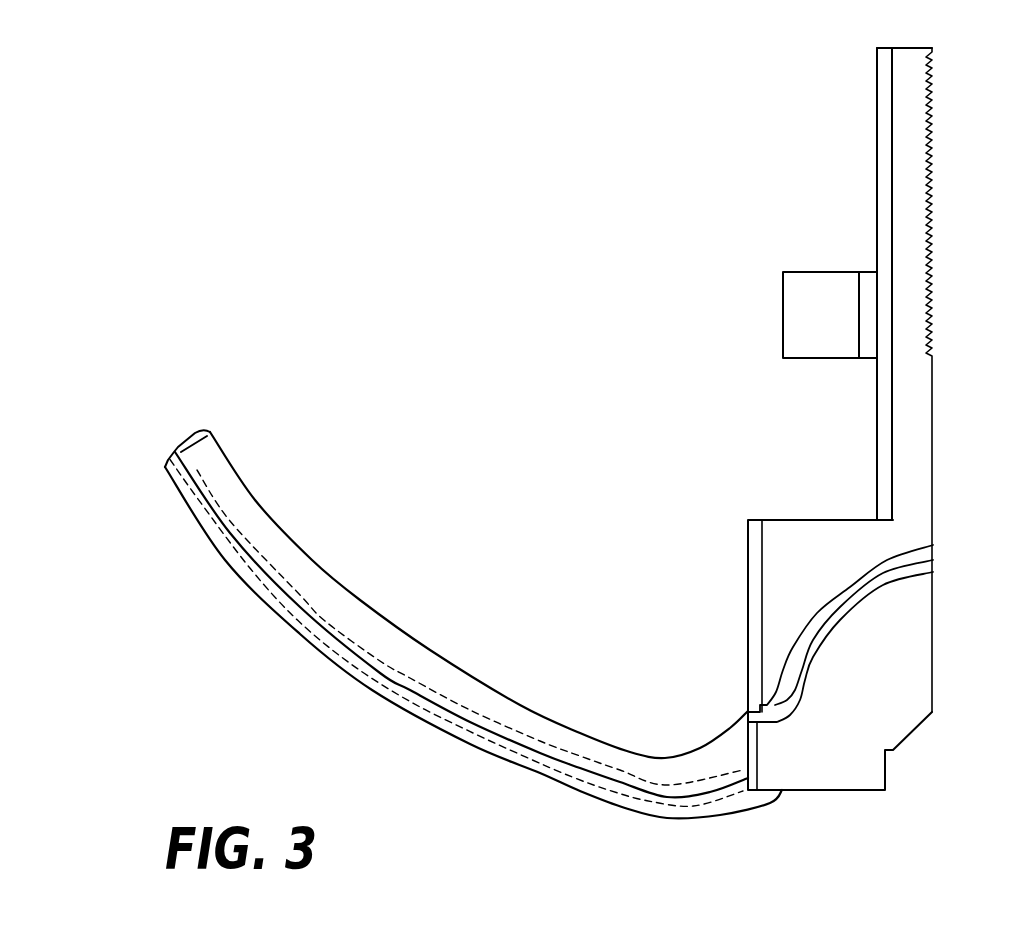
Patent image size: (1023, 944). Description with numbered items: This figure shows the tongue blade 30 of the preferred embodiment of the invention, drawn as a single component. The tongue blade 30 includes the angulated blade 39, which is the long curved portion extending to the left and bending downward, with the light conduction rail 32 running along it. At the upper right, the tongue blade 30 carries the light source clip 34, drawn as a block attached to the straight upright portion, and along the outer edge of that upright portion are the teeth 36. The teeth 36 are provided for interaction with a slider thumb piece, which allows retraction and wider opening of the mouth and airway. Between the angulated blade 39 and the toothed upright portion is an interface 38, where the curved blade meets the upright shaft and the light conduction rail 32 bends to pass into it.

The tongue blade 30 is at (292, 538).
The light conduction rail 32 is at (270, 605).
The light source clip 34 is at (787, 272).
The teeth 36 is at (932, 227).
The interface 38 is at (820, 537).
The angulated blade 39 is at (640, 755).